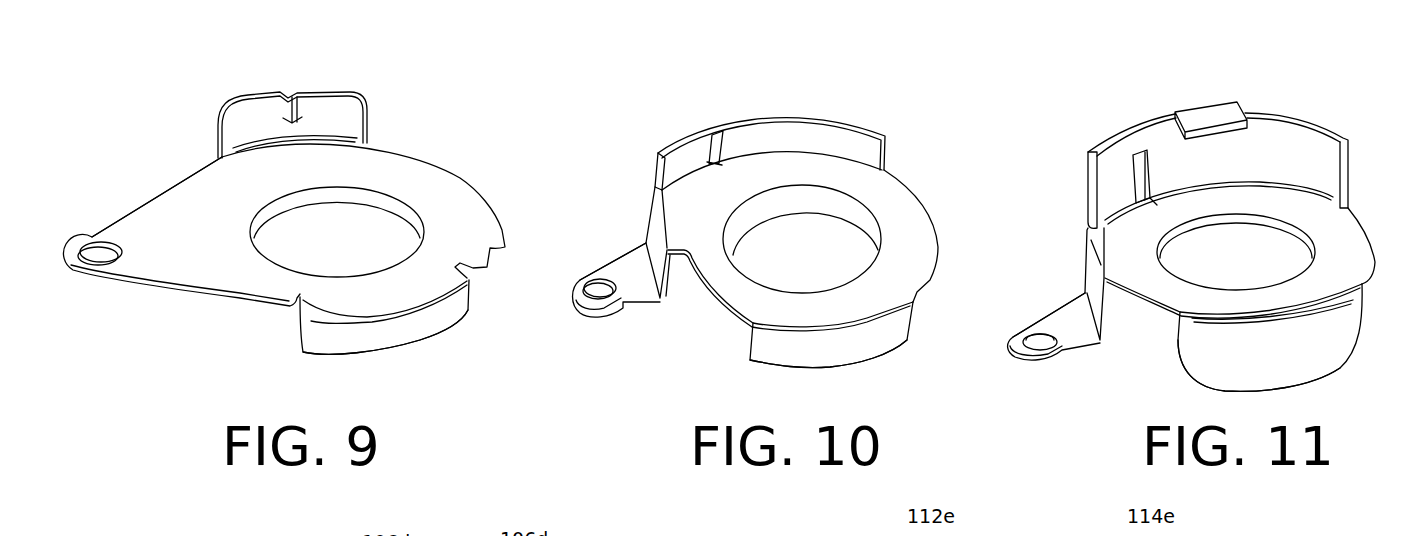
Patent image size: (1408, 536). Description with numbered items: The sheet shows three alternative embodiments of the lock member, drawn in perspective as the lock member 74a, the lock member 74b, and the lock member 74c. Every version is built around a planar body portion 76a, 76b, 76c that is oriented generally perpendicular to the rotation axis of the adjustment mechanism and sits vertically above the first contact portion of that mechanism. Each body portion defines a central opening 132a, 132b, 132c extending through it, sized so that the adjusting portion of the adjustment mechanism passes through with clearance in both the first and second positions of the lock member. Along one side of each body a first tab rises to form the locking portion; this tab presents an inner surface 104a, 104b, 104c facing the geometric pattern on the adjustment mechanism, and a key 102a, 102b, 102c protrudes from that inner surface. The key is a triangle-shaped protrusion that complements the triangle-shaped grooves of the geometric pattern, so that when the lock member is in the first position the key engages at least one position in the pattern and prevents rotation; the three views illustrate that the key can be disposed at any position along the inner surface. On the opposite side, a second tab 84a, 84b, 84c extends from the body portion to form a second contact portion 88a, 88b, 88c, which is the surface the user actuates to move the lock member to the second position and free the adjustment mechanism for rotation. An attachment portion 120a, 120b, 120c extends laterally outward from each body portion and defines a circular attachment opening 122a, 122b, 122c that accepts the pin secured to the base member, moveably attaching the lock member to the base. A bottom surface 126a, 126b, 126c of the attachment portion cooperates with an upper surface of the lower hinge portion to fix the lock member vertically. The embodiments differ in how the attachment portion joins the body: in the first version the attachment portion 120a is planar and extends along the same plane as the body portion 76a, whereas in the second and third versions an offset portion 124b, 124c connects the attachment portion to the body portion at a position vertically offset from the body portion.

In FIG. 9, the lock member 74a is at (147, 101).
In FIG. 9, the body portion 76a is at (430, 180).
In FIG. 9, the second tab 84a is at (443, 337).
In FIG. 9, the second contact portion 88a is at (389, 342).
In FIG. 9, the key 102a is at (277, 107).
In FIG. 9, the inner surface 104a is at (370, 112).
In FIG. 9, the attachment portion 120a is at (147, 270).
In FIG. 9, the attachment opening 122a is at (98, 245).
In FIG. 9, the bottom surface 126a is at (158, 228).
In FIG. 9, the central opening 132a is at (303, 262).
In FIG. 10, the lock member 74b is at (642, 120).
In FIG. 10, the body portion 76b is at (903, 210).
In FIG. 10, the second tab 84b is at (880, 358).
In FIG. 10, the second contact portion 88b is at (820, 350).
In FIG. 10, the key 102b is at (736, 139).
In FIG. 10, the inner surface 104b is at (863, 147).
In FIG. 10, the attachment portion 120b is at (648, 310).
In FIG. 10, the attachment opening 122b is at (590, 282).
In FIG. 10, the offset portion 124b is at (653, 223).
In FIG. 10, the bottom surface 126b is at (627, 265).
In FIG. 10, the central opening 132b is at (770, 273).
In FIG. 11, the lock member 74c is at (1066, 118).
In FIG. 11, the body portion 76c is at (1350, 230).
In FIG. 11, the second tab 84c is at (1333, 377).
In FIG. 11, the second contact portion 88c is at (1254, 370).
In FIG. 11, the key 102c is at (1116, 173).
In FIG. 11, the inner surface 104c is at (1347, 147).
In FIG. 11, the attachment portion 120c is at (1080, 352).
In FIG. 11, the attachment opening 122c is at (1030, 340).
In FIG. 11, the offset portion 124c is at (1087, 267).
In FIG. 11, the bottom surface 126c is at (1067, 318).
In FIG. 11, the central opening 132c is at (1193, 273).